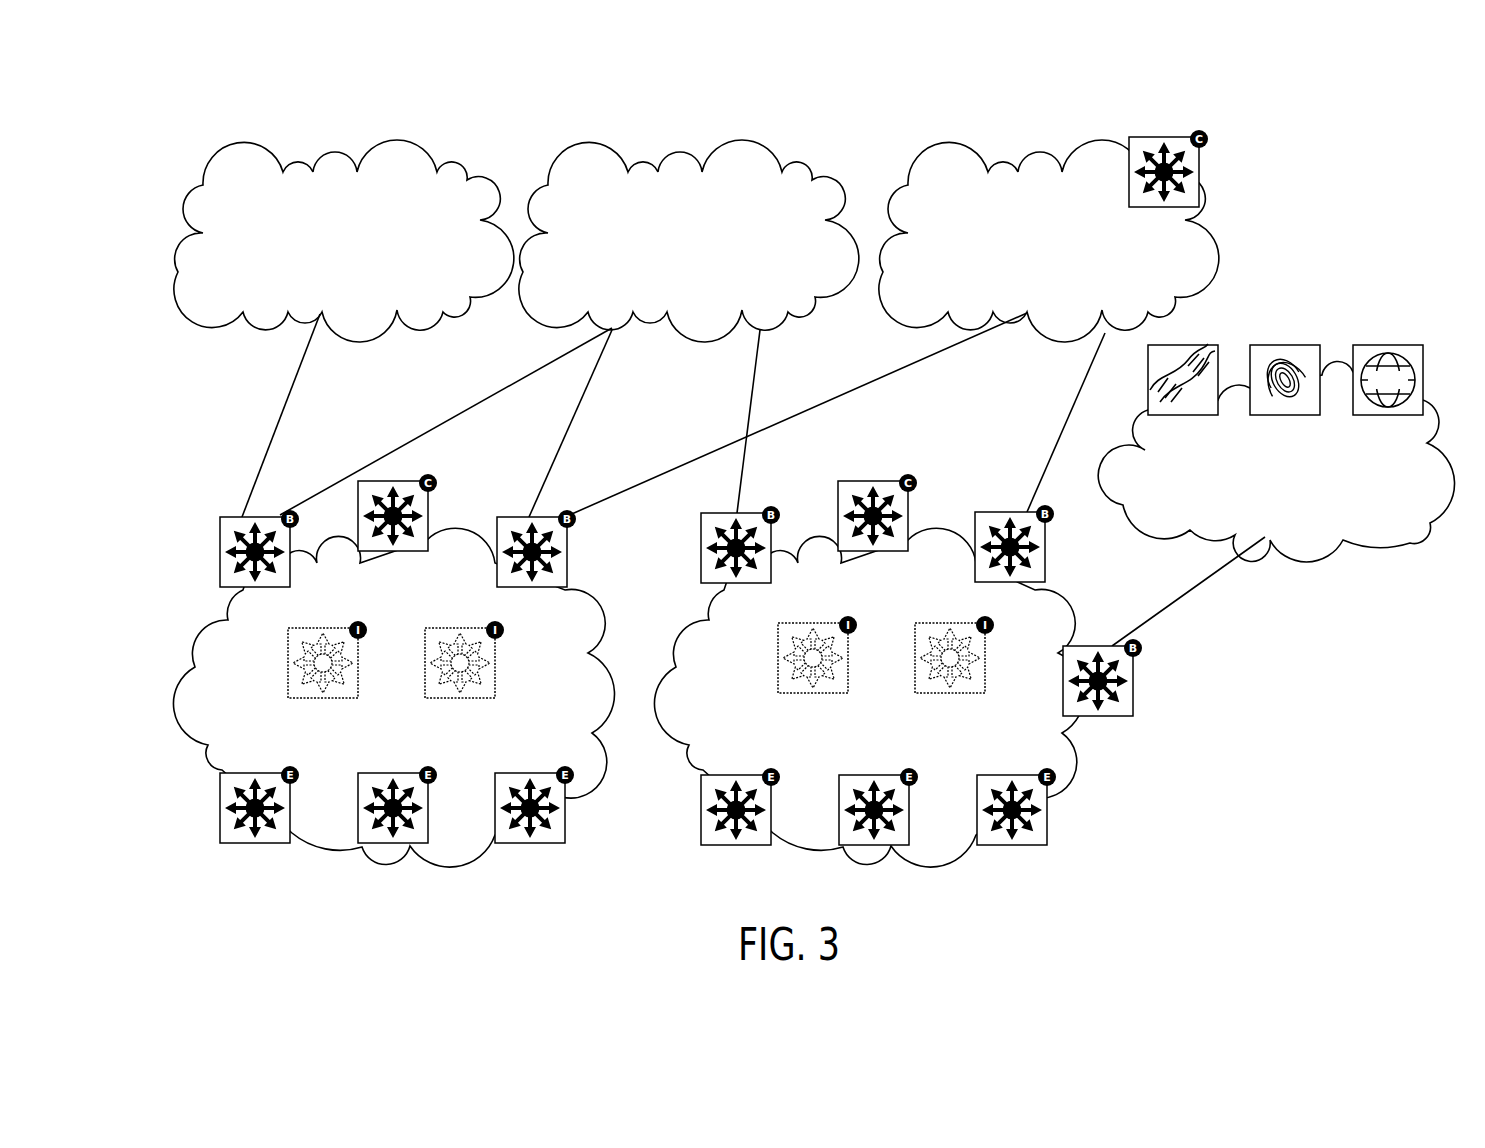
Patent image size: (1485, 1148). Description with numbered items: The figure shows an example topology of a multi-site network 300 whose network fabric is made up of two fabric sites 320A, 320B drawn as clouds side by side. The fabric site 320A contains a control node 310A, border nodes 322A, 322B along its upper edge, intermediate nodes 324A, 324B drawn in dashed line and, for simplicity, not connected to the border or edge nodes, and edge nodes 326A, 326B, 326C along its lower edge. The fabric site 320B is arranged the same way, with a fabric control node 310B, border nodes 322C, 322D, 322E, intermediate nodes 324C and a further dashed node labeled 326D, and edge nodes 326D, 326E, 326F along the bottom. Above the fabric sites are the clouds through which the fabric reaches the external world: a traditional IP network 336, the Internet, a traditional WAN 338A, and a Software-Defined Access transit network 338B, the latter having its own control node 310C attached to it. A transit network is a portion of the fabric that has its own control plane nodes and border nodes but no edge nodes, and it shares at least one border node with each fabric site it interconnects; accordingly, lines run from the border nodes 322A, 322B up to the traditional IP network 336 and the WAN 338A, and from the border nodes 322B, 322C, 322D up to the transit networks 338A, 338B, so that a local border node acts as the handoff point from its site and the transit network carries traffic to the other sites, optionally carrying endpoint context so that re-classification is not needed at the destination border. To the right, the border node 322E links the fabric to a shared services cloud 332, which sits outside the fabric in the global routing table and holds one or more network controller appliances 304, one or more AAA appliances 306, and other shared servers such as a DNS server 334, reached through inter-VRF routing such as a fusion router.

The multi-site network 300 is at (168, 113).
The network controller appliance 304 is at (1185, 345).
The AAA appliance 306 is at (1283, 345).
The DNS server 334 is at (1390, 345).
The control node 310A is at (402, 552).
The fabric control node 310B is at (880, 552).
The control plane node 310C is at (1200, 182).
The fabric site 320A is at (393, 697).
The fabric site 320B is at (869, 697).
The border node 322A is at (245, 590).
The border node 322B is at (497, 590).
The border node 322C is at (768, 587).
The border node 322D is at (998, 588).
The border node 322E is at (1129, 717).
The intermediate node 324A is at (290, 698).
The intermediate node 324B is at (495, 698).
The intermediate node 324C is at (780, 694).
The edge node 326A is at (258, 845).
The edge node 326B is at (385, 845).
The edge node 326C is at (528, 845).
The edge node 326D is at (984, 694).
The edge node 326E is at (858, 846).
The edge node 326F is at (1010, 846).
The shared services cloud 332 is at (1276, 461).
The traditional IP network 336 is at (344, 241).
The traditional WAN 338A is at (689, 241).
The Software-Defined Access transit network 338B is at (1049, 241).